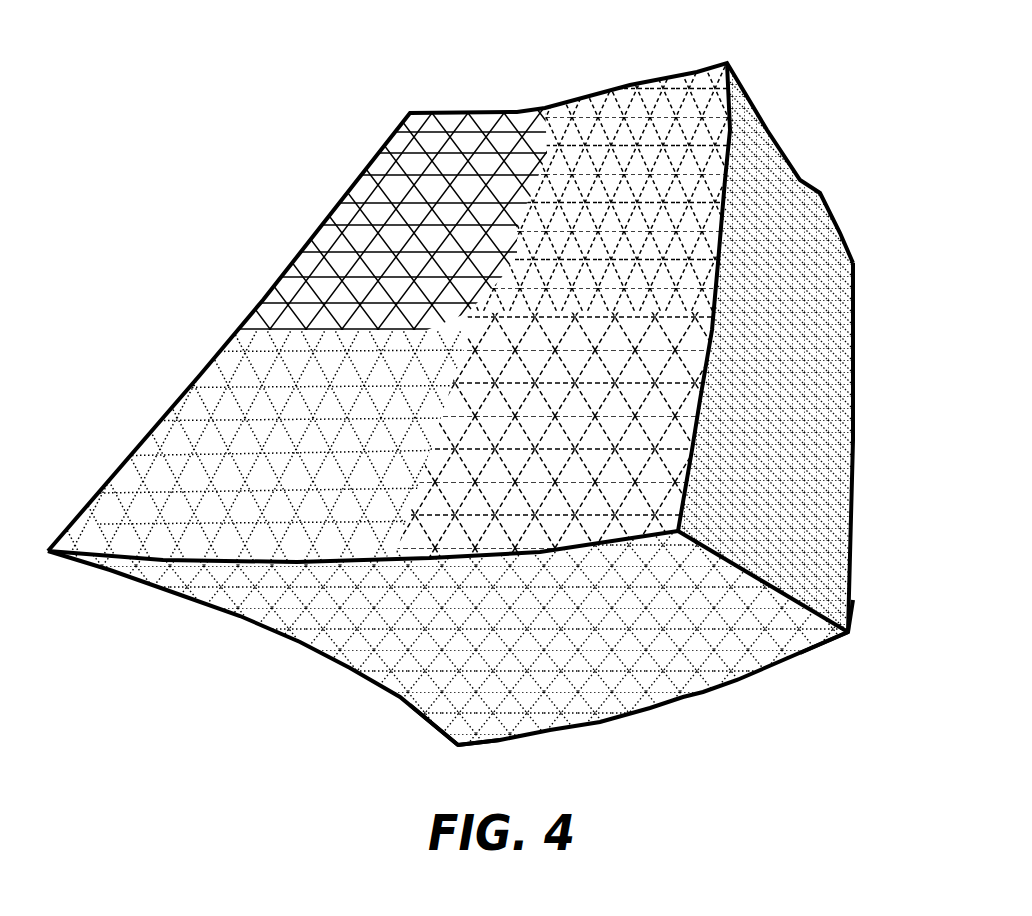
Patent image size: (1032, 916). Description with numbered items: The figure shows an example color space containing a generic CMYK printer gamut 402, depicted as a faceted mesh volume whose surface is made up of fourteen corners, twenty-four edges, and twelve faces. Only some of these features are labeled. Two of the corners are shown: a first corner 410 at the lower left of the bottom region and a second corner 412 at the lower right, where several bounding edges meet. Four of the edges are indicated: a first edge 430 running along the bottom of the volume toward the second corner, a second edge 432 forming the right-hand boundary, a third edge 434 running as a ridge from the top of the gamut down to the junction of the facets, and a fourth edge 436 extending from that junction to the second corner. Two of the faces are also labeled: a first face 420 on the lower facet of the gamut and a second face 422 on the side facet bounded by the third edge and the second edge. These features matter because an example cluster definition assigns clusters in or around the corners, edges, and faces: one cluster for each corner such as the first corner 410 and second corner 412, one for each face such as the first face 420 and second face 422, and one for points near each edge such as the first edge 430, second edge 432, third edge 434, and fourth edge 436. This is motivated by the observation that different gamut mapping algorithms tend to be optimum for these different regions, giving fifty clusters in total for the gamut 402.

The generic CMYK printer gamut 402 is at (478, 397).
The first corner 410 is at (457, 745).
The second corner 412 is at (850, 632).
The first face 420 is at (603, 652).
The second face 422 is at (815, 346).
The first edge 430 is at (690, 697).
The second edge 432 is at (877, 438).
The third edge 434 is at (723, 110).
The fourth edge 436 is at (817, 614).